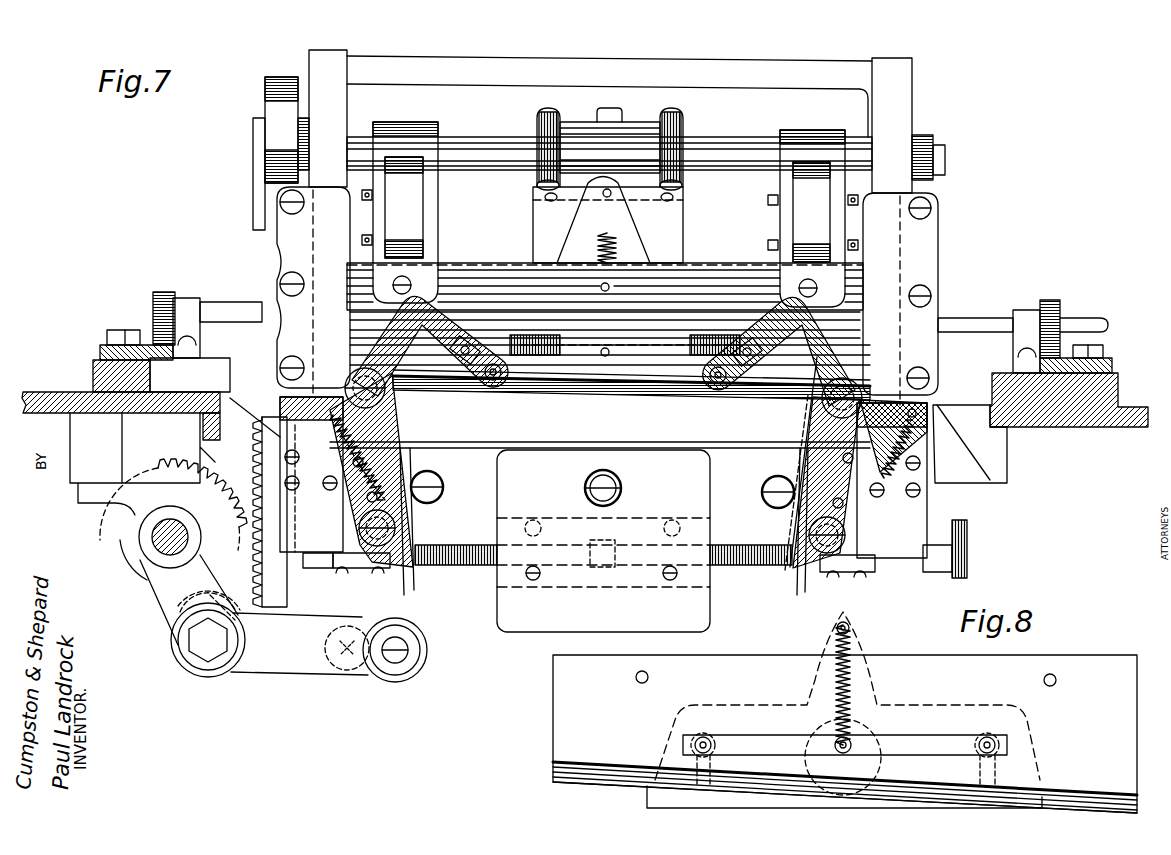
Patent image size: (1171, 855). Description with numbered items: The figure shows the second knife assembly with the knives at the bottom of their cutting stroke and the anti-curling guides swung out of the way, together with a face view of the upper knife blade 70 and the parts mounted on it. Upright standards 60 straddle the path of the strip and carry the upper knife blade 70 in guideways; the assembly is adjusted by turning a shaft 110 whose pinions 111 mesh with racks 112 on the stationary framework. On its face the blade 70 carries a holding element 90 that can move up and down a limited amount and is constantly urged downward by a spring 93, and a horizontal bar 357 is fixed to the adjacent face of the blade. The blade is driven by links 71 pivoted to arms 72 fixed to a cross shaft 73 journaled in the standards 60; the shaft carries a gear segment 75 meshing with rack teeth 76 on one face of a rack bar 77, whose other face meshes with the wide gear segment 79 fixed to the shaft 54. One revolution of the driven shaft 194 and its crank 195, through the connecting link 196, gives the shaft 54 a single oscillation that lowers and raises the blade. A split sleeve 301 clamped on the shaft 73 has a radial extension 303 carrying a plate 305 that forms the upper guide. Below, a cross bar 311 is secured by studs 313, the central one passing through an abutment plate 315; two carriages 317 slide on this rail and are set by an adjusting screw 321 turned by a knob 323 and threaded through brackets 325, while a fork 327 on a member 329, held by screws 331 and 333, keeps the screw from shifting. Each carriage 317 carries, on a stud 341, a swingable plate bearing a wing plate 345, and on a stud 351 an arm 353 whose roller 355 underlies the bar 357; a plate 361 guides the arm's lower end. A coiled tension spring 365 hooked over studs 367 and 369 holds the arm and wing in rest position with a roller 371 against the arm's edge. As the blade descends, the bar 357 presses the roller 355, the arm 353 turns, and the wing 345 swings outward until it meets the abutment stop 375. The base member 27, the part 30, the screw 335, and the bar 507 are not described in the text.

In FIG. 7, the base frame 27 is at (1080, 424).
In FIG. 7, the plate 30 is at (634, 245).
In FIG. 7, the shaft 54 is at (152, 537).
In FIG. 7, the upright standards 60 is at (345, 126).
In FIG. 7, the upper knife blade 70 is at (478, 268).
In FIG. 8, the upper knife blade 70 is at (1085, 676).
In FIG. 7, the links 71 is at (418, 207).
In FIG. 7, the arms 72 is at (430, 180).
In FIG. 7, the cross shaft 73 is at (736, 144).
In FIG. 7, the gear segment 75 is at (276, 78).
In FIG. 7, the rack teeth 76 is at (262, 200).
In FIG. 7, the rack bar 77 is at (288, 596).
In FIG. 7, the wide gear segment 79 is at (195, 470).
In FIG. 8, the holding element 90 is at (940, 705).
In FIG. 7, the spring 93 is at (597, 243).
In FIG. 8, the spring 93 is at (858, 710).
In FIG. 7, the shaft 110 is at (965, 322).
In FIG. 7, the pinions 111 is at (170, 292).
In FIG. 7, the racks 112 is at (158, 332).
In FIG. 7, the driven shaft 194 is at (340, 670).
In FIG. 7, the crank 195 is at (392, 683).
In FIG. 7, the connecting link 196 is at (265, 672).
In FIG. 7, the split sleeve 301 is at (650, 125).
In FIG. 7, the radial extension 303 is at (675, 192).
In FIG. 7, the plate 305 is at (685, 262).
In FIG. 7, the cross bar 311 is at (748, 567).
In FIG. 7, the studs 313 is at (440, 482).
In FIG. 7, the abutment plate 315 is at (700, 610).
In FIG. 7, the carriages 317 is at (338, 516).
In FIG. 7, the adjusting screw 321 is at (472, 567).
In FIG. 7, the knob 323 is at (966, 532).
In FIG. 7, the brackets 325 is at (358, 578).
In FIG. 7, the fork 327 is at (603, 580).
In FIG. 7, the member 329 is at (658, 517).
In FIG. 7, the screws 331 is at (541, 529).
In FIG. 7, the screws 333 is at (669, 582).
In FIG. 7, the screw 335 is at (551, 572).
In FIG. 7, the stud 341 is at (355, 532).
In FIG. 7, the wing plate 345 is at (408, 445).
In FIG. 7, the stud 351 is at (365, 370).
In FIG. 7, the arm 353 is at (365, 340).
In FIG. 7, the roller 355 is at (490, 400).
In FIG. 7, the horizontal bar 357 is at (705, 345).
In FIG. 8, the horizontal bar 357 is at (935, 745).
In FIG. 7, the plate 361 is at (900, 445).
In FIG. 7, the coiled tension spring 365 is at (900, 470).
In FIG. 7, the stud 367 is at (915, 408).
In FIG. 7, the stud 369 is at (798, 518).
In FIG. 7, the roller 371 is at (812, 436).
In FIG. 7, the abutment stop 375 is at (405, 400).
In FIG. 7, the bar 507 is at (690, 312).